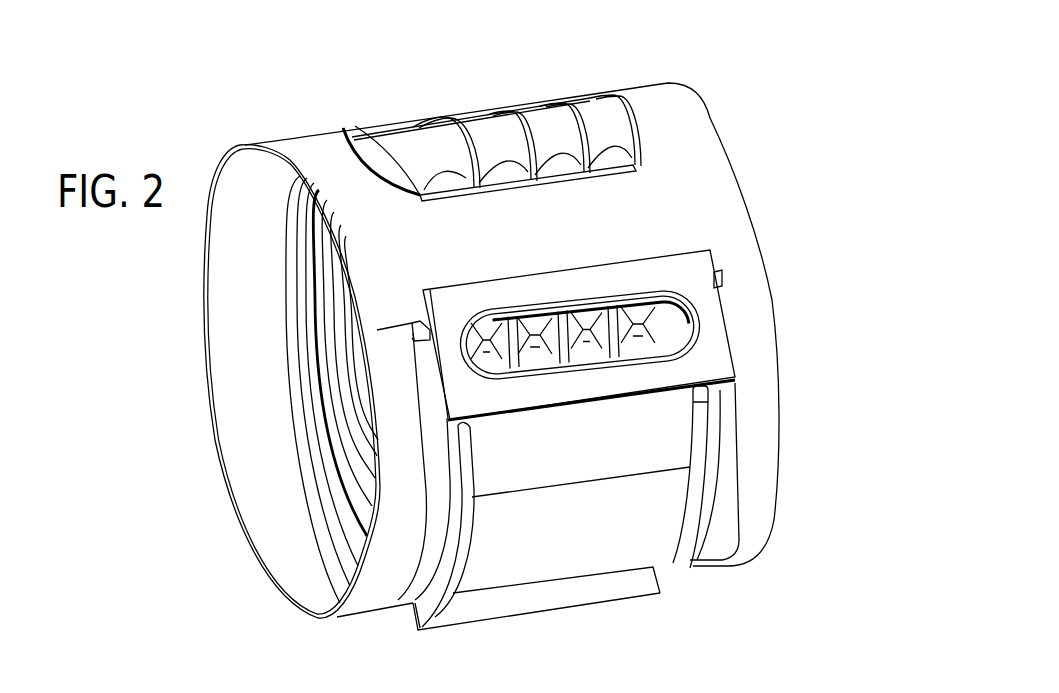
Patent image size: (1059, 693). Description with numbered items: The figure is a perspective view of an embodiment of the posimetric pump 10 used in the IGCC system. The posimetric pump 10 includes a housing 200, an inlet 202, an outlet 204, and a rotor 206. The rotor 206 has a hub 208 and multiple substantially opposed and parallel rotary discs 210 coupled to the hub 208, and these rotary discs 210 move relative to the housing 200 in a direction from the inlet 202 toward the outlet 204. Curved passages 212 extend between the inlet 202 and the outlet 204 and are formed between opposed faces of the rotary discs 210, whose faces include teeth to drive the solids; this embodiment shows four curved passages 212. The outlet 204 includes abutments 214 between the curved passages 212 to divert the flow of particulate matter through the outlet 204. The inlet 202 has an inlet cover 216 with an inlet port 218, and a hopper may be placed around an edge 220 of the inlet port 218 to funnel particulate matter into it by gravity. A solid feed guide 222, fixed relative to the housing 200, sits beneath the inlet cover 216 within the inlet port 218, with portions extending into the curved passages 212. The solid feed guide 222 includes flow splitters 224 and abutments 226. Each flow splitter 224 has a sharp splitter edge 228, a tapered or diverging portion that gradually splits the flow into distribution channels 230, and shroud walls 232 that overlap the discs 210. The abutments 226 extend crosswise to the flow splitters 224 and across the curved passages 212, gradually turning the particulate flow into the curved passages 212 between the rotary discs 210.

The posimetric pump 10 is at (216, 126).
The housing 200 is at (614, 86).
The inlet 202 is at (690, 290).
The outlet 204 is at (404, 112).
The rotor 206 is at (345, 498).
The hub 208 is at (357, 423).
The rotary discs 210 is at (521, 111).
The curved passages 212 is at (479, 172).
The abutments 214 is at (345, 126).
The inlet cover 216 is at (735, 362).
The inlet port 218 is at (601, 302).
The edge 220 is at (700, 330).
The solid feed guide 222 is at (532, 328).
The flow splitters 224 is at (504, 345).
The abutments 226 is at (638, 328).
The sharp splitter edge 228 is at (583, 347).
The distribution channels 230 is at (590, 350).
The shroud walls 232 is at (553, 357).